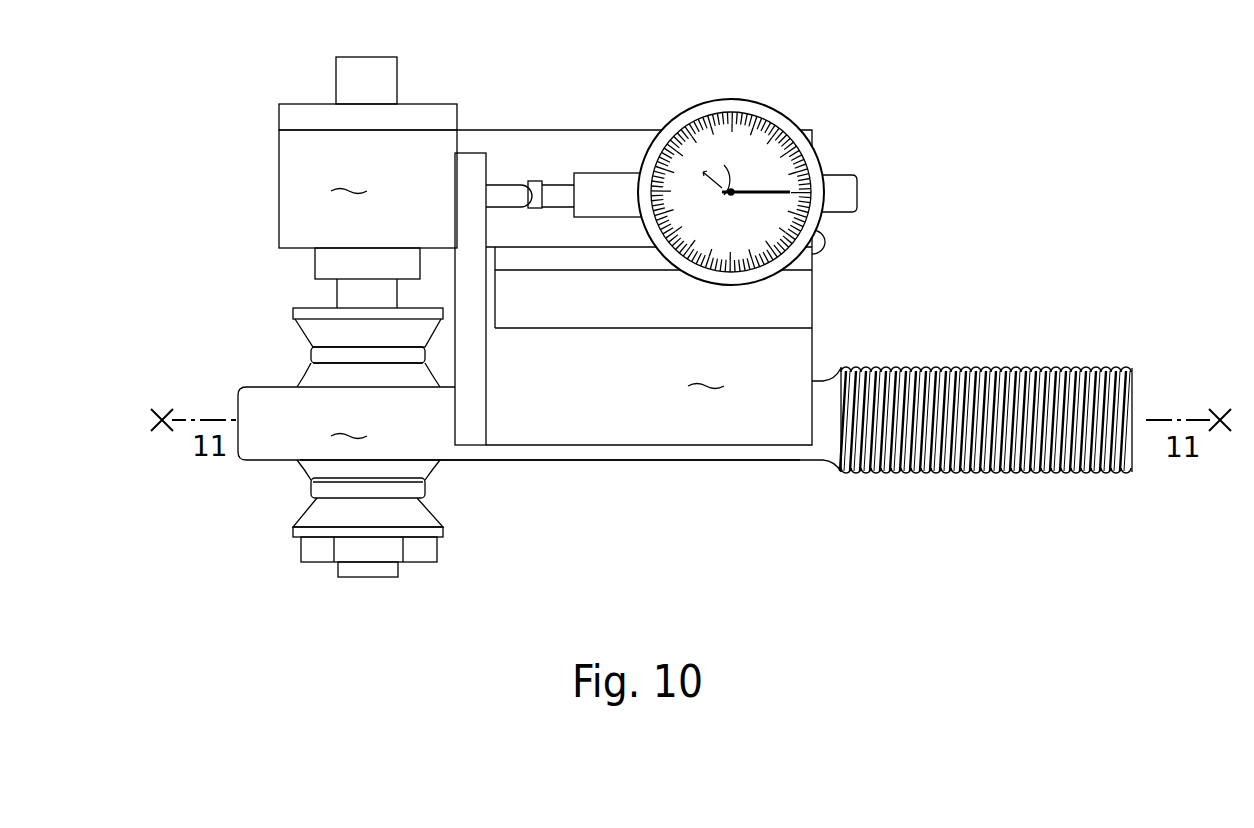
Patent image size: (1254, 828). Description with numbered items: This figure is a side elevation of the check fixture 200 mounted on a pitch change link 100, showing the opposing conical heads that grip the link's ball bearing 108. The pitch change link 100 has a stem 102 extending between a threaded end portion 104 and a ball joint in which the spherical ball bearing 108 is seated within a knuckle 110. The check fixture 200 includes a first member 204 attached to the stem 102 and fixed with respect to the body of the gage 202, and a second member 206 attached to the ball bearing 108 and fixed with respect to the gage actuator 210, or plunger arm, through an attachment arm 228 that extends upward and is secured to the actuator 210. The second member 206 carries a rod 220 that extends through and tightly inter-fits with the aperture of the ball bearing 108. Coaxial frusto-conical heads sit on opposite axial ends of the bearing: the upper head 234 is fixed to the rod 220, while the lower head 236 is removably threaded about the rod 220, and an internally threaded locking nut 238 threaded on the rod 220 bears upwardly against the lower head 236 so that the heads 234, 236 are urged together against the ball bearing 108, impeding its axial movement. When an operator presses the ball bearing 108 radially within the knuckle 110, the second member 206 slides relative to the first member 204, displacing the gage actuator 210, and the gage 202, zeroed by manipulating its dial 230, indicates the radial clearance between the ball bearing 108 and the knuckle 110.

The pitch change link 100 is at (676, 491).
The stem 102 is at (636, 462).
The threaded end portion 104 is at (1001, 472).
The ball bearing 108 is at (425, 468).
The knuckle 110 is at (539, 420).
The check fixture 200 is at (576, 239).
The gage 202 is at (812, 146).
The first member 204 is at (640, 287).
The second member 206 is at (368, 152).
The gage actuator 210 is at (556, 192).
The rod 220 is at (347, 293).
The attachment arm 228 is at (505, 192).
The dial 230 is at (837, 198).
The upper head 234 is at (317, 329).
The lower head 236 is at (317, 518).
The locking nut 238 is at (320, 556).